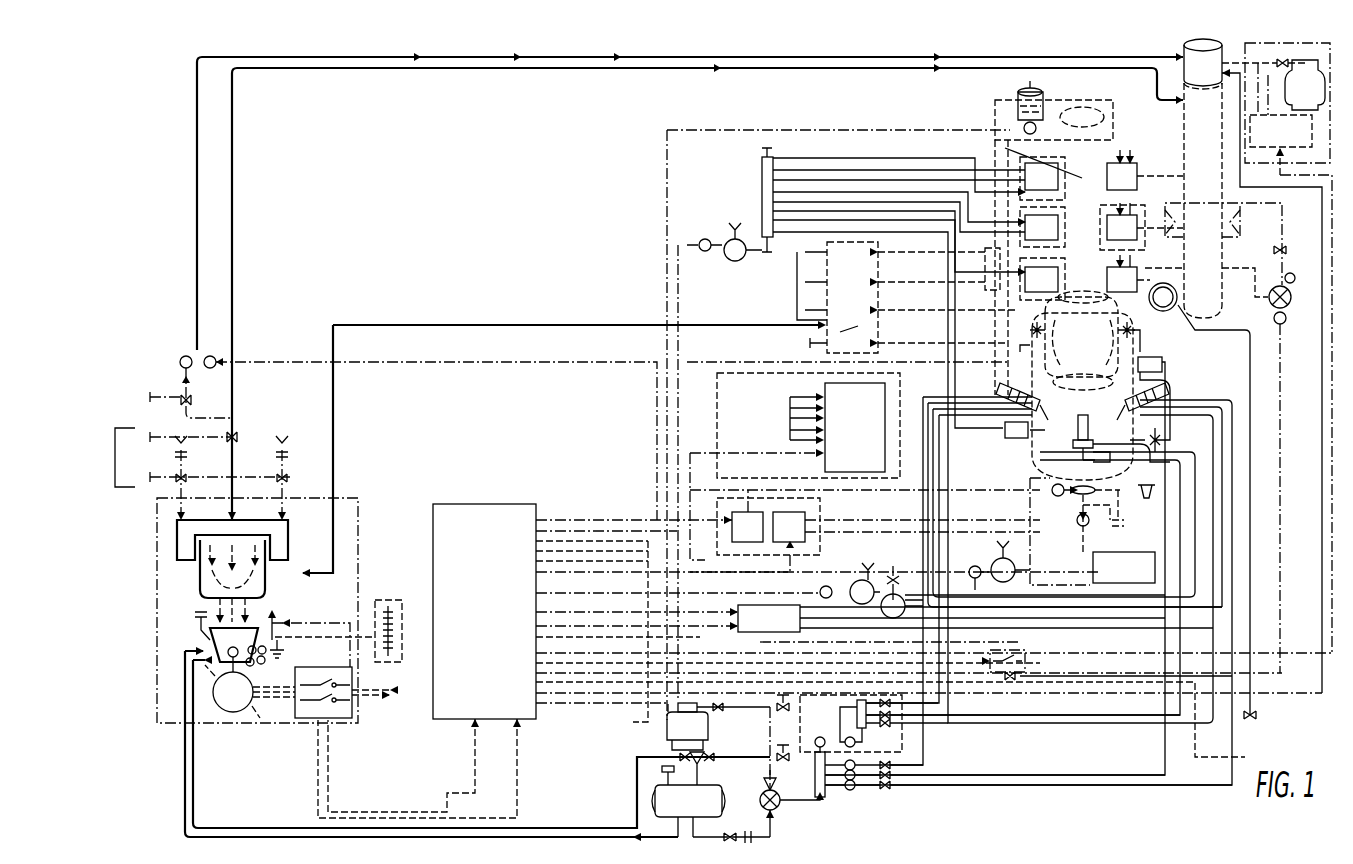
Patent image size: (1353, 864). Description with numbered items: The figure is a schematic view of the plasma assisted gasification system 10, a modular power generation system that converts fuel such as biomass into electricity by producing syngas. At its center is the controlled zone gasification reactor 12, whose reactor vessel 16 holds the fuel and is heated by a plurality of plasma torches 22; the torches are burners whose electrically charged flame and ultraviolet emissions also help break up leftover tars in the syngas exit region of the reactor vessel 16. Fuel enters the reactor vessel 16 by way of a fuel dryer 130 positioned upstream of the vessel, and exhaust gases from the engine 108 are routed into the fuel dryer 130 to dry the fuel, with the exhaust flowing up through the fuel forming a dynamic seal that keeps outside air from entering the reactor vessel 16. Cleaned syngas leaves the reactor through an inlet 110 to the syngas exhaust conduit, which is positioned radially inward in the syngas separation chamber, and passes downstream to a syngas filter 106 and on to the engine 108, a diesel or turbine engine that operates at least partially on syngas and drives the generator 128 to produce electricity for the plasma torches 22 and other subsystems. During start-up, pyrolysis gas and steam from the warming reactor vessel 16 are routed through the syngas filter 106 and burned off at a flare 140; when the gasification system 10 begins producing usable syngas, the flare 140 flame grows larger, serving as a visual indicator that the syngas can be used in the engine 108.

The plasma assisted gasification system 10 is at (598, 221).
The controlled zone gasification reactor 12 is at (1032, 380).
The reactor vessel 16 is at (1040, 447).
The plasma torch 22 is at (1008, 396).
The syngas filter 106 is at (1181, 143).
The engine 108 is at (358, 518).
The inlet to the syngas exhaust conduit 110 is at (1118, 190).
The generator 128 is at (232, 713).
The fuel dryer 130 is at (1005, 148).
The flare 140 is at (1180, 57).